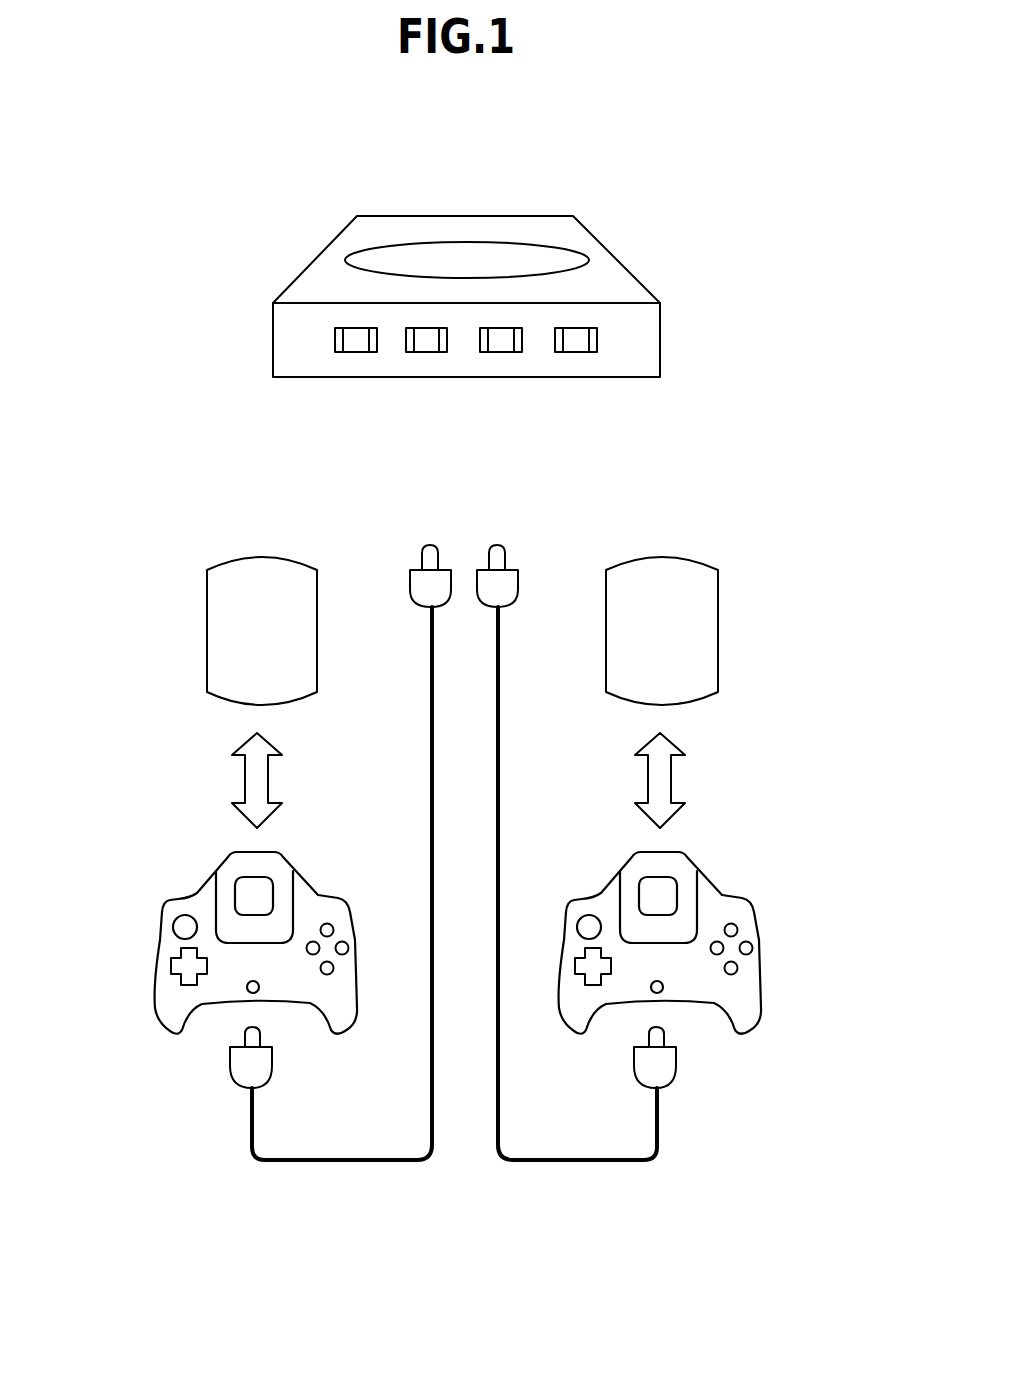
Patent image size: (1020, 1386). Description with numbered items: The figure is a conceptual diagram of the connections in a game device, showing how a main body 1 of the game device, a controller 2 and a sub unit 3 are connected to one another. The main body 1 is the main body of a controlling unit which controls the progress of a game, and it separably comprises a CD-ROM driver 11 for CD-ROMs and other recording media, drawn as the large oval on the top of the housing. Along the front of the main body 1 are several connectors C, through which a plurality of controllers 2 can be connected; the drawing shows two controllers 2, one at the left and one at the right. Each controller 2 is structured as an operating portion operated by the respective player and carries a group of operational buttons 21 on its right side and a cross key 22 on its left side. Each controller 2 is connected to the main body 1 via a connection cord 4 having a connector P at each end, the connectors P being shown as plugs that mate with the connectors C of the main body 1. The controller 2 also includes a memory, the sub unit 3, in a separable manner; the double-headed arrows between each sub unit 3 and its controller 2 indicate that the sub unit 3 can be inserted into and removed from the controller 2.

The main body 1 is at (375, 216).
The CD-ROM driver 11 is at (565, 255).
The connector C is at (353, 343).
The sub unit 3 is at (227, 562).
The controller 2 is at (180, 1037).
The group of operational buttons 21 is at (327, 923).
The cross key 22 is at (185, 985).
The connector P is at (480, 570).
The connection cord 4 is at (403, 1163).